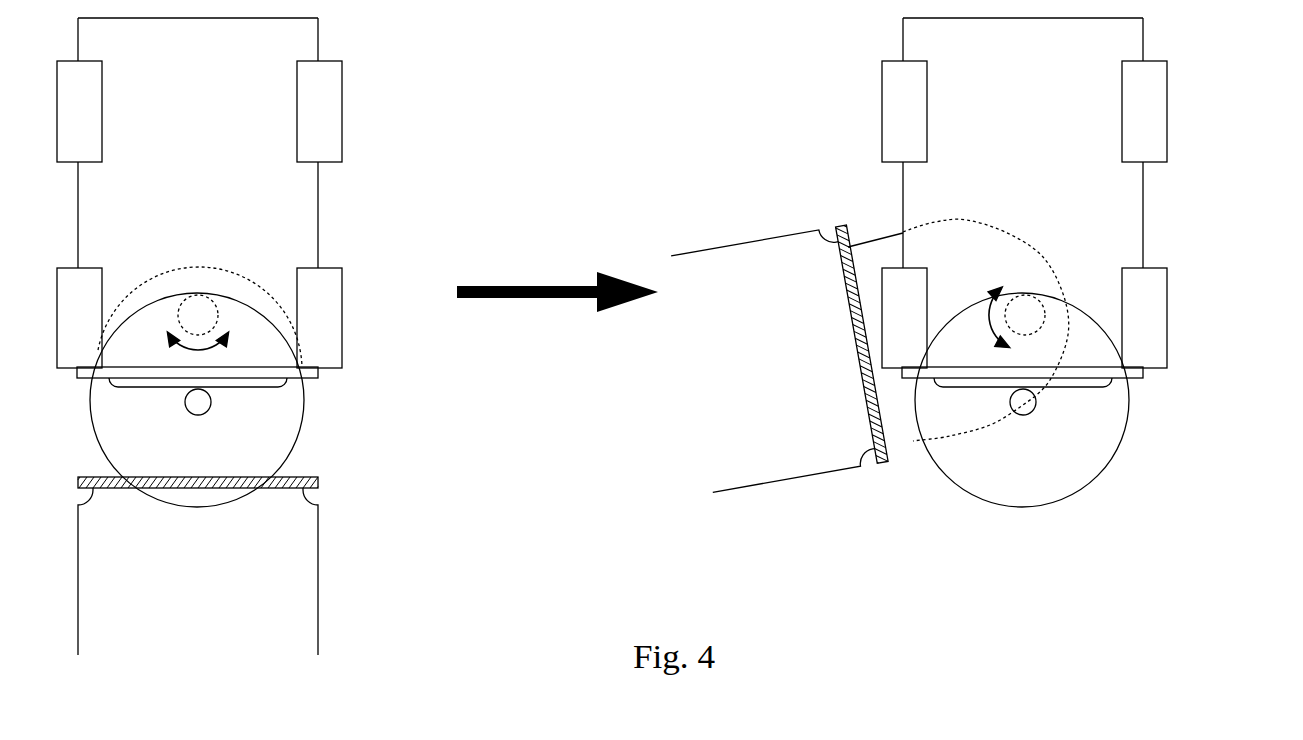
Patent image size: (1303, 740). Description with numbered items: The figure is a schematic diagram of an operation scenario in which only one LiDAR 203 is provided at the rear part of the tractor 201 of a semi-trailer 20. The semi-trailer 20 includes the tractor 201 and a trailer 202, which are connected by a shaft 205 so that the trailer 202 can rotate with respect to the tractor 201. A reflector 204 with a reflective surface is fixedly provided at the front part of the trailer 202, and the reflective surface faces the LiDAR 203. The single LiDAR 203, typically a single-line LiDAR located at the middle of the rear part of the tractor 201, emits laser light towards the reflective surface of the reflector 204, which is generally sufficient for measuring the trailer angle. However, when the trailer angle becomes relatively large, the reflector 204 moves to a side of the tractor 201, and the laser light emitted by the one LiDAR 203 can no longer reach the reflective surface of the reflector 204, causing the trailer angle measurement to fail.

The semi-trailer 20 is at (362, 122).
The tractor 201 is at (297, 228).
The trailer 202 is at (278, 592).
The LiDAR 203 is at (212, 401).
The reflector 204 is at (318, 482).
The shaft 205 is at (188, 303).